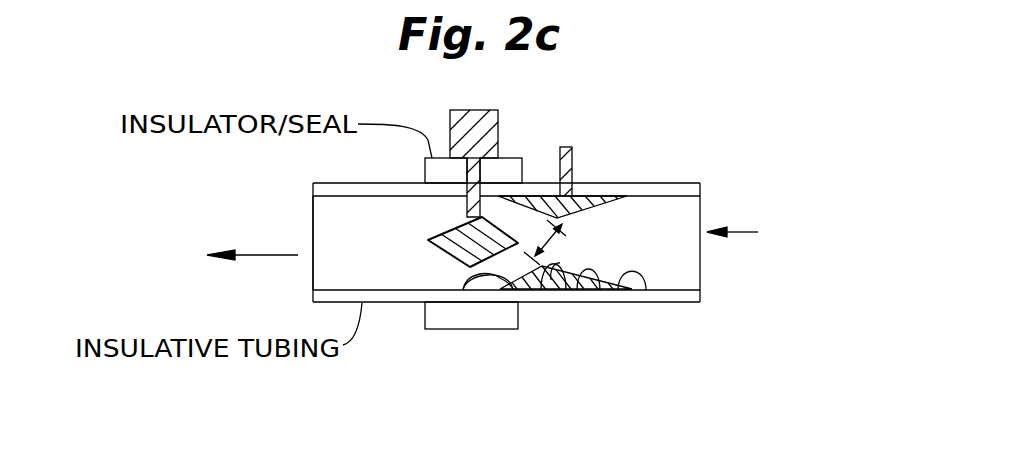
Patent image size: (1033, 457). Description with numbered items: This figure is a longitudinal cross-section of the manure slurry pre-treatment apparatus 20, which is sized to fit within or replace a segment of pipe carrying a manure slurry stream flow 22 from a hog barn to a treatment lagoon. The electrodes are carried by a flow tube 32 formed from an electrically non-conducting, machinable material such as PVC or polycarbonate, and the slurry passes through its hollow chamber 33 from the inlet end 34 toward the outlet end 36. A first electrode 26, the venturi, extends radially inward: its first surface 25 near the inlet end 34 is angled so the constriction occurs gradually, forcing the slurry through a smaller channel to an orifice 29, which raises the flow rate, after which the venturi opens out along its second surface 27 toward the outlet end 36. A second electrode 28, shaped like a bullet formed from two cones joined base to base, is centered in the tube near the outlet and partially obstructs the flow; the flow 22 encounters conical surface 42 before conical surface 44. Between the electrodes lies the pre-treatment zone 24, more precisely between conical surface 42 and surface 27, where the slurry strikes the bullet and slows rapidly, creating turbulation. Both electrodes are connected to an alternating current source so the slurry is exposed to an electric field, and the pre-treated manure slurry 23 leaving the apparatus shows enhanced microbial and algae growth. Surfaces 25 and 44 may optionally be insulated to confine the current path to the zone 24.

The manure slurry pre-treatment apparatus 20 is at (366, 350).
The manure slurry stream flow 22 is at (795, 231).
The pre-treated manure slurry 23 is at (245, 268).
The pre-treatment zone 24 is at (512, 290).
The first surface 25 is at (578, 290).
The first electrode 26 is at (567, 147).
The second surface 27 is at (463, 292).
The second electrode 28 is at (460, 110).
The orifice 29 is at (551, 280).
The flow tube 32 is at (688, 303).
The hollow chamber 33 is at (688, 267).
The inlet end 34 is at (700, 200).
The outlet end 36 is at (313, 195).
The conical surface 42 is at (524, 203).
The conical surface 44 is at (438, 230).